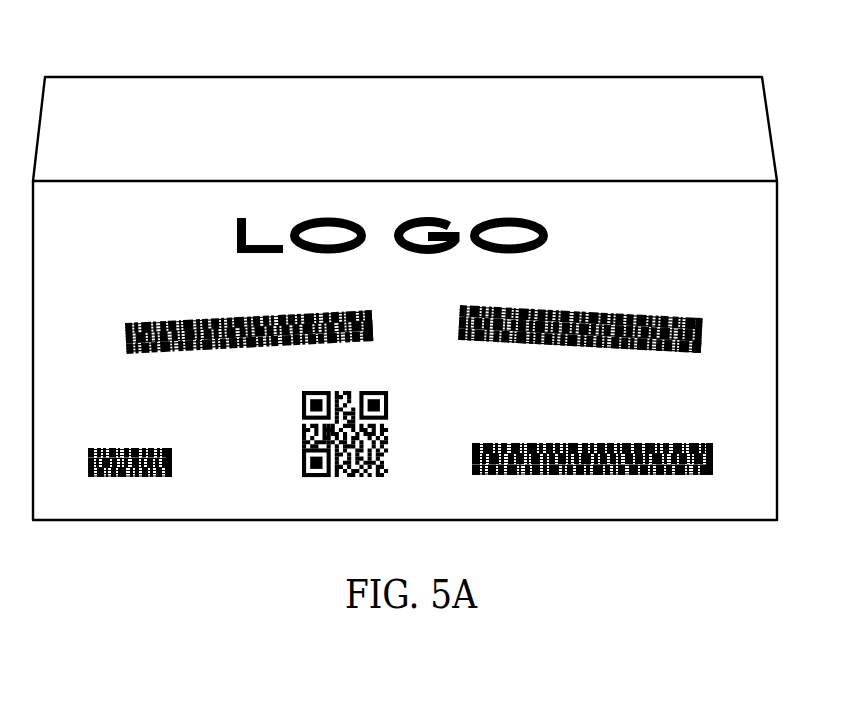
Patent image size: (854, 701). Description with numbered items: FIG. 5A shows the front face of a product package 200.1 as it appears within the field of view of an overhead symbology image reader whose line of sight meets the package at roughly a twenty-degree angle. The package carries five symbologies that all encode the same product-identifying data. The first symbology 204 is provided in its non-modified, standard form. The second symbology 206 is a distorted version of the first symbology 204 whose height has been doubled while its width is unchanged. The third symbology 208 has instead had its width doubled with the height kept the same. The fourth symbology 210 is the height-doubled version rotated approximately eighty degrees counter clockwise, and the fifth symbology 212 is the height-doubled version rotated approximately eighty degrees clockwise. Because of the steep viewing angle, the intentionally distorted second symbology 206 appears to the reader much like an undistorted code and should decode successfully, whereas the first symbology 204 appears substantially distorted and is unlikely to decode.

The product package 200.1 is at (237, 86).
The first symbology 204 is at (125, 449).
The second symbology 206 is at (301, 436).
The third symbology 208 is at (473, 472).
The fourth symbology 210 is at (468, 311).
The fifth symbology 212 is at (126, 333).